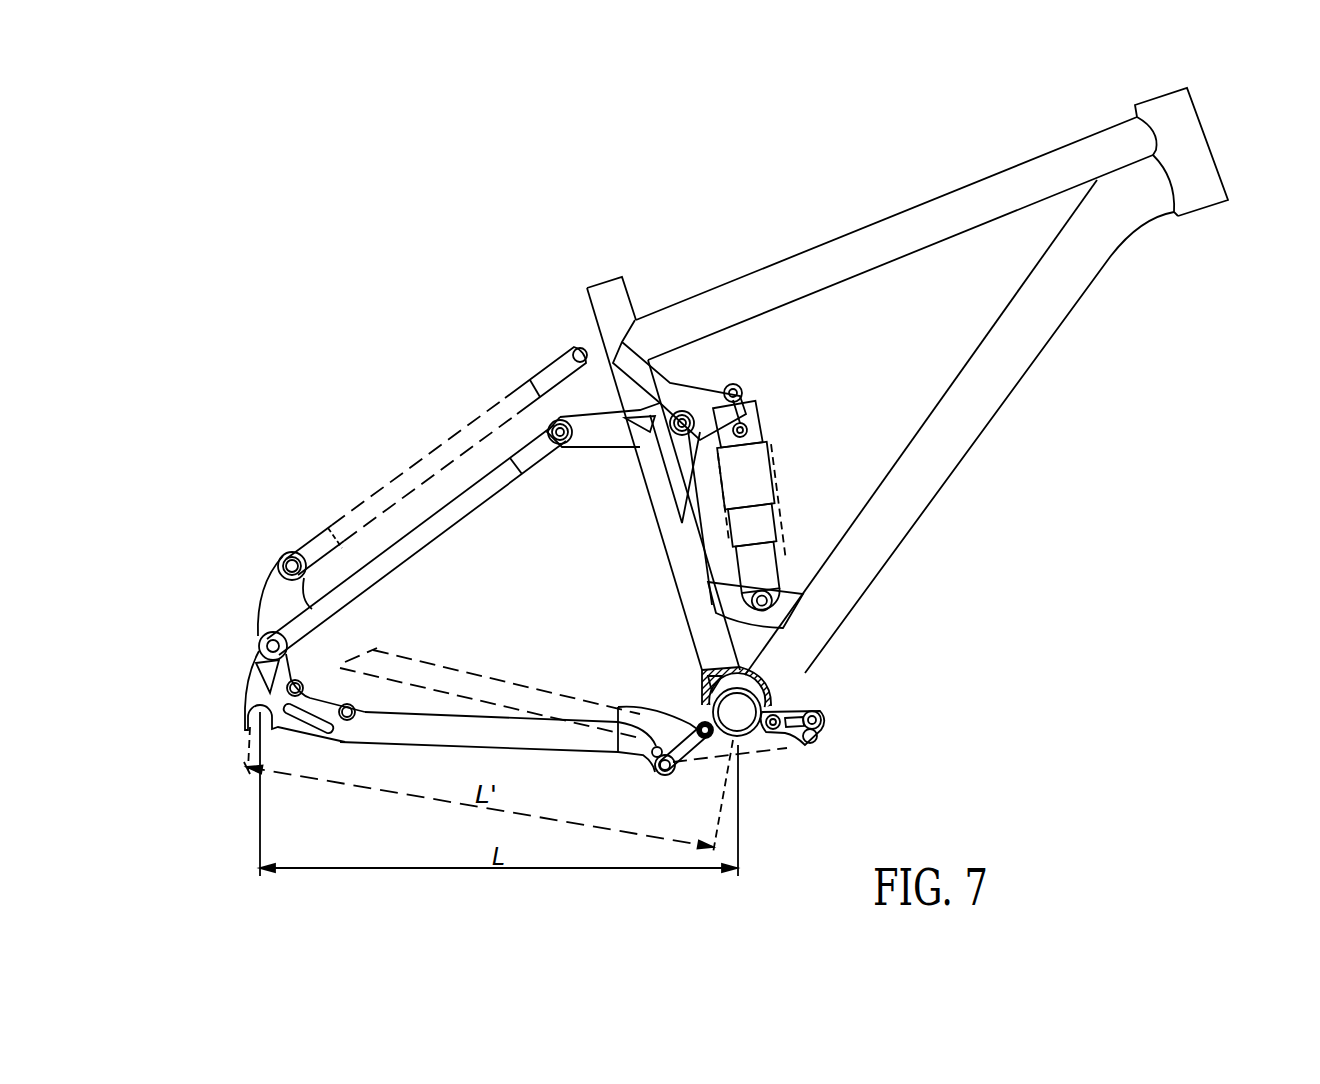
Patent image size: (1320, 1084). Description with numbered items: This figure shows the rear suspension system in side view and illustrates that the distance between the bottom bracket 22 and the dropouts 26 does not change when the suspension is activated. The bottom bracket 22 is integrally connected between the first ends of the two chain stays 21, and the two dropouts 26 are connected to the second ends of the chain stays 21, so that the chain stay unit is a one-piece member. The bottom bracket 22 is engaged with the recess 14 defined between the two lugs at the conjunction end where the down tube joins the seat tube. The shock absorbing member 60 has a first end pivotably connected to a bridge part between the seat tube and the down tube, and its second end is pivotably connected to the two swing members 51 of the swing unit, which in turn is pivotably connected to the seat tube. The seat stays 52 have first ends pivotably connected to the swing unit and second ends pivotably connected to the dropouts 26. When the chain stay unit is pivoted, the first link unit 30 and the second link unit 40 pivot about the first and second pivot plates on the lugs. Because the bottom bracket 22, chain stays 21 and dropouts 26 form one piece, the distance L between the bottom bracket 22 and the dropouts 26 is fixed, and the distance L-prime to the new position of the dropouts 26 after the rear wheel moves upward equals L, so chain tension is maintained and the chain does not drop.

The recess 14 is at (783, 692).
The chain stays 21 is at (485, 720).
The bottom bracket 22 is at (765, 703).
The dropouts 26 is at (290, 605).
The first link unit 30 is at (828, 736).
The second link unit 40 is at (678, 723).
The swing members 51 is at (603, 385).
The seat stays 52 is at (437, 510).
The shock absorbing member 60 is at (780, 472).